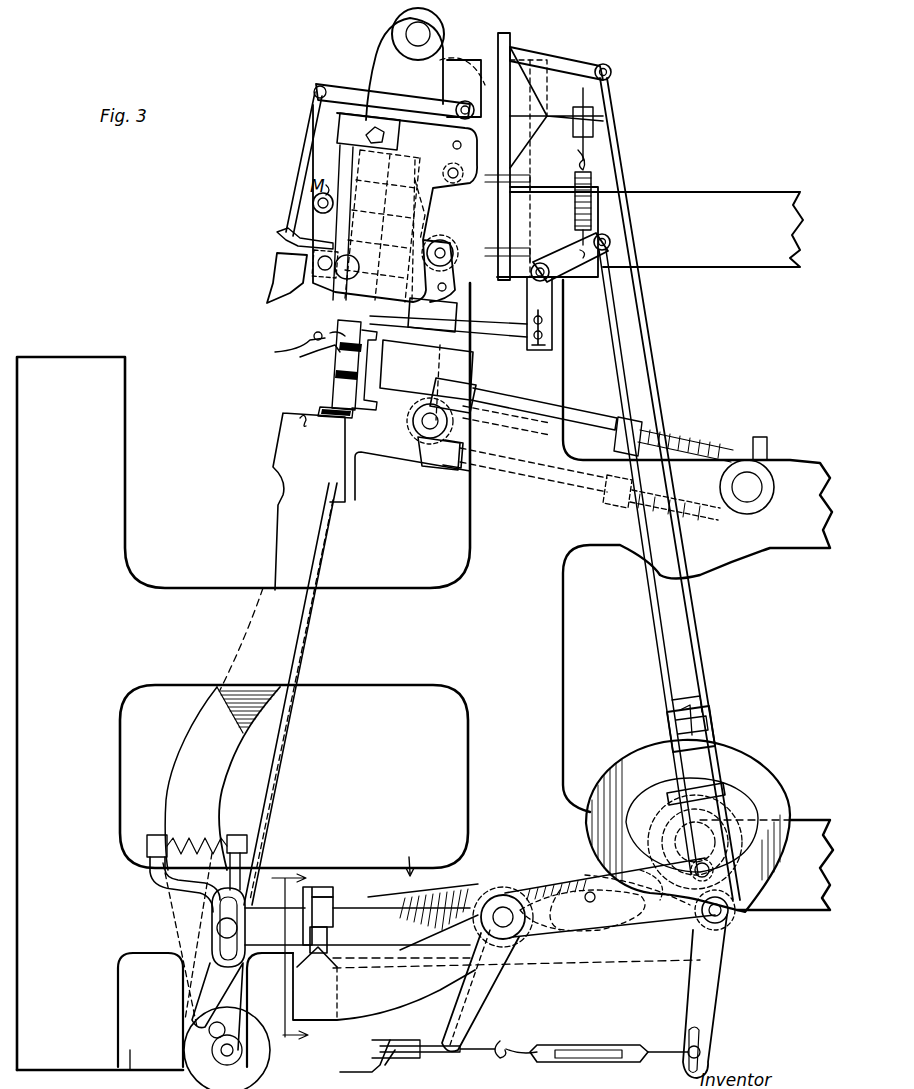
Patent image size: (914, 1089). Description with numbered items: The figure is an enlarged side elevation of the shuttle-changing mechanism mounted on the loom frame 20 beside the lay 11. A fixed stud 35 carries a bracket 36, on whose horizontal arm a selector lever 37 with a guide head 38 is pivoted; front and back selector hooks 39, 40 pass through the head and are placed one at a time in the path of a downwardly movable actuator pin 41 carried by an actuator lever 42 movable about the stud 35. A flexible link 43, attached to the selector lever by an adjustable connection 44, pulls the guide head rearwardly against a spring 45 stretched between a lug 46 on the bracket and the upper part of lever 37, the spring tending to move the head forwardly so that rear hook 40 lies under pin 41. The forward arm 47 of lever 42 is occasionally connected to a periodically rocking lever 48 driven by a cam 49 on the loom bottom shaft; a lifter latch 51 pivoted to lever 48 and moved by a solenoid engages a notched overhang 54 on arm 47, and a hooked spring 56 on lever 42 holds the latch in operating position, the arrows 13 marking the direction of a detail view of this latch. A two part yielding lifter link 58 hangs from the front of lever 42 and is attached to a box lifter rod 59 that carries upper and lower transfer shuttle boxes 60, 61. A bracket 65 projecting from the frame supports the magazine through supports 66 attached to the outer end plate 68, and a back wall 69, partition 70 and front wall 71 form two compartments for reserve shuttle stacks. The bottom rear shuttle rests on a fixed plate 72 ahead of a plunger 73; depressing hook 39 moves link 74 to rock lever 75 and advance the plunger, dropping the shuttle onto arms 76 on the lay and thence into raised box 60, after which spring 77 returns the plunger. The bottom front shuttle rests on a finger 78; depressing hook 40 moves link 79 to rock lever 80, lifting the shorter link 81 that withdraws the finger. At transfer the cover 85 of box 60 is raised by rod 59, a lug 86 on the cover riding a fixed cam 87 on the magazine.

The sewing machine bed 11 is at (411, 849).
The section line 13 is at (285, 965).
The frame standard 20 is at (125, 513).
The fixed stud 35 is at (506, 925).
The bracket 36 is at (484, 985).
The selector lever 37 is at (710, 958).
The guide head 38 is at (727, 795).
The front selector hook 39 is at (668, 730).
The back selector hook 40 is at (712, 735).
The actuator pin 41 is at (710, 880).
The actuator lever 42 is at (595, 886).
The flexible link 43 is at (478, 1056).
The adjustable connection 44 is at (648, 1046).
The spring 45 is at (630, 935).
The lug 46 is at (582, 924).
The forward arm 47 is at (408, 905).
The rocking lever 48 is at (360, 1022).
The cam 49 is at (740, 915).
The lifter latch 51 is at (328, 935).
The notched overhang 54 is at (345, 905).
The hooked spring 56 is at (330, 893).
The two part yielding lifter link 58 is at (245, 1050).
The box lifter rod 59 is at (283, 750).
The upper transfer shuttle box 60 is at (345, 362).
The lower transfer shuttle box 61 is at (342, 392).
The bracket 65 is at (500, 207).
The supports 66 is at (430, 36).
The outer end plate 68 is at (383, 72).
The back wall 69 is at (436, 210).
The partition 70 is at (395, 140).
The front wall 71 is at (358, 175).
The fixed plate 72 is at (333, 336).
The plunger 73 is at (435, 332).
The link 74 is at (662, 597).
The lever 75 is at (570, 280).
The arms 76 is at (413, 332).
The spring 77 is at (577, 205).
The finger 78 is at (280, 236).
The link 79 is at (645, 365).
The lever 80 is at (553, 78).
The shorter link 81 is at (311, 138).
The cover 85 is at (311, 351).
The lug 86 is at (301, 345).
The fixed cam 87 is at (280, 272).